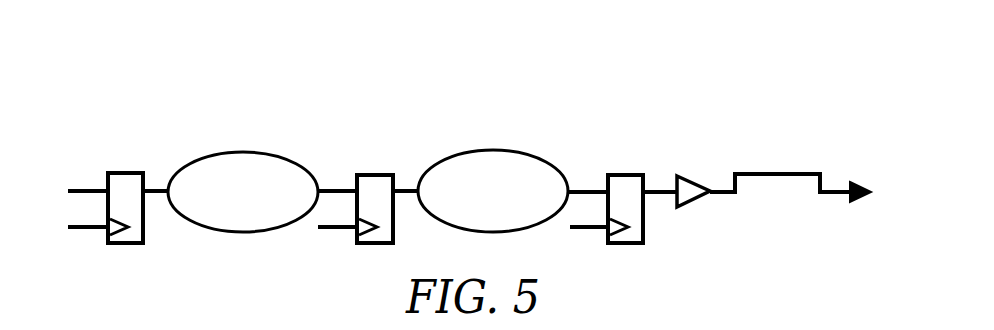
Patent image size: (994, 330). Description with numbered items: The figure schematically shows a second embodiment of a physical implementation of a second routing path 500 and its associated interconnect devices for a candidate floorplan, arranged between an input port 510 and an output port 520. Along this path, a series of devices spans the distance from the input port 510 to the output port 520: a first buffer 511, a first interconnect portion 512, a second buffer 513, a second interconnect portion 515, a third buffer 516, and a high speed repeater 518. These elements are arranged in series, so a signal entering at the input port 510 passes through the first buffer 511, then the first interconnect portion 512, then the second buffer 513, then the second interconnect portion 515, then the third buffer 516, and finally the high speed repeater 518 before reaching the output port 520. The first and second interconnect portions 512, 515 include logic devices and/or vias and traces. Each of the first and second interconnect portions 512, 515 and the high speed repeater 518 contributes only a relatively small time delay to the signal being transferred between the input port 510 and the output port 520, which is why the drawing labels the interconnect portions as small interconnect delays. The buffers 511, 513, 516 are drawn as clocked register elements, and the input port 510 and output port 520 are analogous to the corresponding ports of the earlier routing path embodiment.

The second routing path 500 is at (143, 83).
The input port 510 is at (100, 189).
The first buffer 511 is at (125, 173).
The first interconnect portion 512 is at (238, 152).
The second buffer 513 is at (375, 175).
The second interconnect portion 515 is at (490, 150).
The third buffer 516 is at (625, 175).
The high speed repeater 518 is at (766, 174).
The output port 520 is at (901, 170).